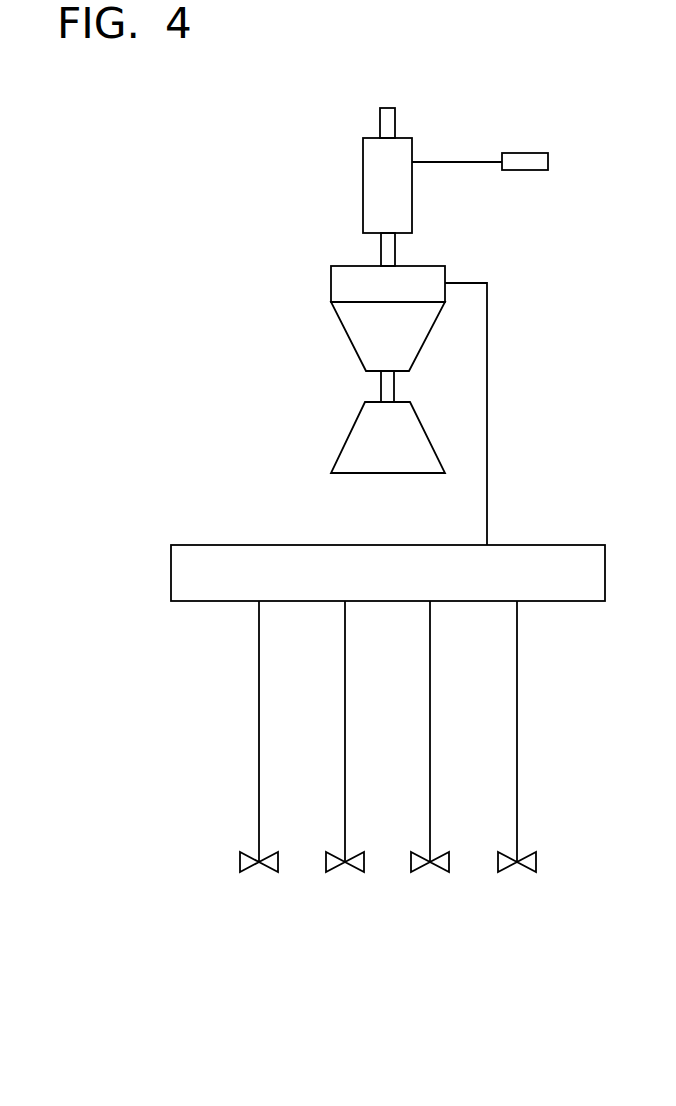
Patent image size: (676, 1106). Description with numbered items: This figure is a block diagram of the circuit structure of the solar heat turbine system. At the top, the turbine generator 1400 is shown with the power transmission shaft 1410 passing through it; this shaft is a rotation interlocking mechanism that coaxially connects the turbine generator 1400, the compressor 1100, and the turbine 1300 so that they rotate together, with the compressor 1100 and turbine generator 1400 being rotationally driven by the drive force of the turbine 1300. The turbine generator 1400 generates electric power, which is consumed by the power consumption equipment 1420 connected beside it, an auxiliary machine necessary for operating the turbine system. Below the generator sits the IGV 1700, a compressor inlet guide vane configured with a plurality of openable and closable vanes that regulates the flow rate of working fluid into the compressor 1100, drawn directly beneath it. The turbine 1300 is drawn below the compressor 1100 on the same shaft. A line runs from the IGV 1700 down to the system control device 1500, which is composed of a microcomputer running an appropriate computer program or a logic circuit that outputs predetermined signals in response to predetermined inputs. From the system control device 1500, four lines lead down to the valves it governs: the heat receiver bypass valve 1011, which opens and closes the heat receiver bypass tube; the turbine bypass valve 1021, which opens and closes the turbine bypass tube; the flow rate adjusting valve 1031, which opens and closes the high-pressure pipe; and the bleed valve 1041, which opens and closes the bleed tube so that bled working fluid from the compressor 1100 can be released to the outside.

The heat receiver bypass valve 1011 is at (266, 873).
The turbine bypass valve 1021 is at (353, 873).
The flow rate adjusting valve 1031 is at (438, 873).
The bleed valve 1041 is at (525, 873).
The compressor 1100 is at (349, 337).
The turbine 1300 is at (351, 432).
The turbine generator 1400 is at (363, 177).
The power transmission shaft 1410 is at (389, 107).
The power consumption equipment 1420 is at (528, 152).
The system control device 1500 is at (171, 572).
The IGV 1700 is at (331, 280).